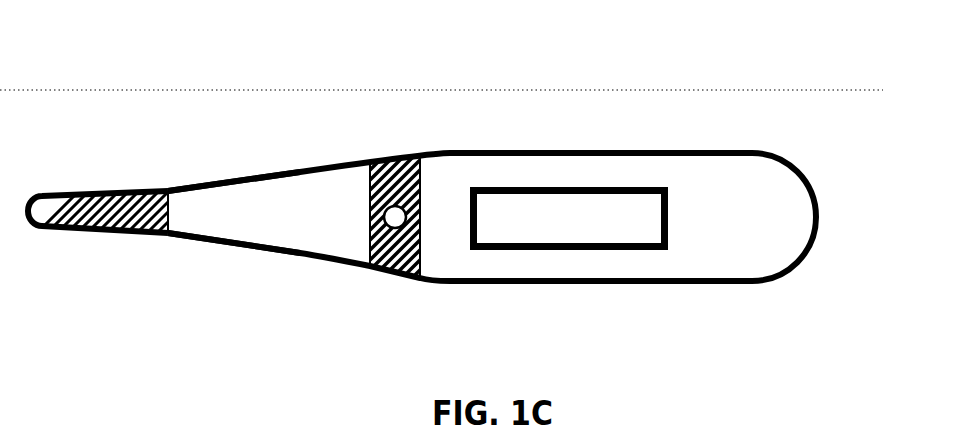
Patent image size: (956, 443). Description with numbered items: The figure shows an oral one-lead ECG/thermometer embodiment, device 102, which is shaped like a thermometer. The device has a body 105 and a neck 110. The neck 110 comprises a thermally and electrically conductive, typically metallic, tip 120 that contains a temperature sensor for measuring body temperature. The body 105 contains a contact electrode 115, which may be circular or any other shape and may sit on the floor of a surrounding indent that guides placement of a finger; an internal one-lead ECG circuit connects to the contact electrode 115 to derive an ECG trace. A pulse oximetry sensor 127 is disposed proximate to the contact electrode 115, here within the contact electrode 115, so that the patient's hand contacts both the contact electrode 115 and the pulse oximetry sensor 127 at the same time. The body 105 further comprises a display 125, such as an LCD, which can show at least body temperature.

The device 102 is at (456, 193).
The body 105 is at (557, 148).
The neck 110 is at (212, 187).
The contact electrode 115 is at (395, 155).
The tip 120 is at (120, 187).
The display 125 is at (573, 223).
The pulse oximetry sensor 127 is at (385, 232).